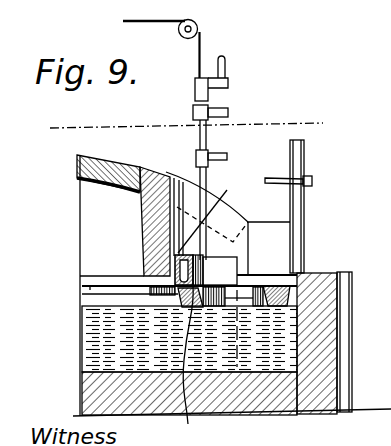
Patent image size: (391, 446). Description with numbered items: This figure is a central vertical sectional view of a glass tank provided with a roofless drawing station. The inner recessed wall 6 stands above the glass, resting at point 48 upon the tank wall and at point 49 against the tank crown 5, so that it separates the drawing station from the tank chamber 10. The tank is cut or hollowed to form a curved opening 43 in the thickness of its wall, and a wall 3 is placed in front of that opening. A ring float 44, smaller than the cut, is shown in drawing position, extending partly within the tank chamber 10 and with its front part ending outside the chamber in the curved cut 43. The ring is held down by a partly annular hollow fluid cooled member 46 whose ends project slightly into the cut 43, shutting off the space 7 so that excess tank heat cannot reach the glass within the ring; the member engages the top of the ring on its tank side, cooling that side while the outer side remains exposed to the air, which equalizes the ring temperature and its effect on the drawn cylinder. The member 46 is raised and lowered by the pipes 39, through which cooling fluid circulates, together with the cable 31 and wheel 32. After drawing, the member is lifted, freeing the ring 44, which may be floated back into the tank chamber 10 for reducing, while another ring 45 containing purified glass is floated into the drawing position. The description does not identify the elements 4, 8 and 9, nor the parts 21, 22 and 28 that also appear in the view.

The wall 3 is at (317, 276).
The mold 4 is at (153, 283).
The tank crown 5 is at (110, 152).
The inner recessed wall 6 is at (140, 227).
The space 7 is at (264, 229).
The mold plate 8 is at (82, 292).
The cooling liquid 9 is at (103, 348).
The tank chamber 10 is at (84, 210).
The post 21 is at (304, 164).
The side wall 22 is at (352, 336).
The pipe fitting 28 is at (209, 101).
The cable 31 is at (203, 46).
The wheel 32 is at (197, 24).
The pipes 39 is at (229, 114).
The curved opening 43 is at (268, 283).
The ring float 44 is at (229, 63).
The ring 45 is at (93, 287).
The partly annular hollow fluid cooled member 46 is at (253, 213).
The point 48 is at (250, 275).
The point 49 is at (141, 168).